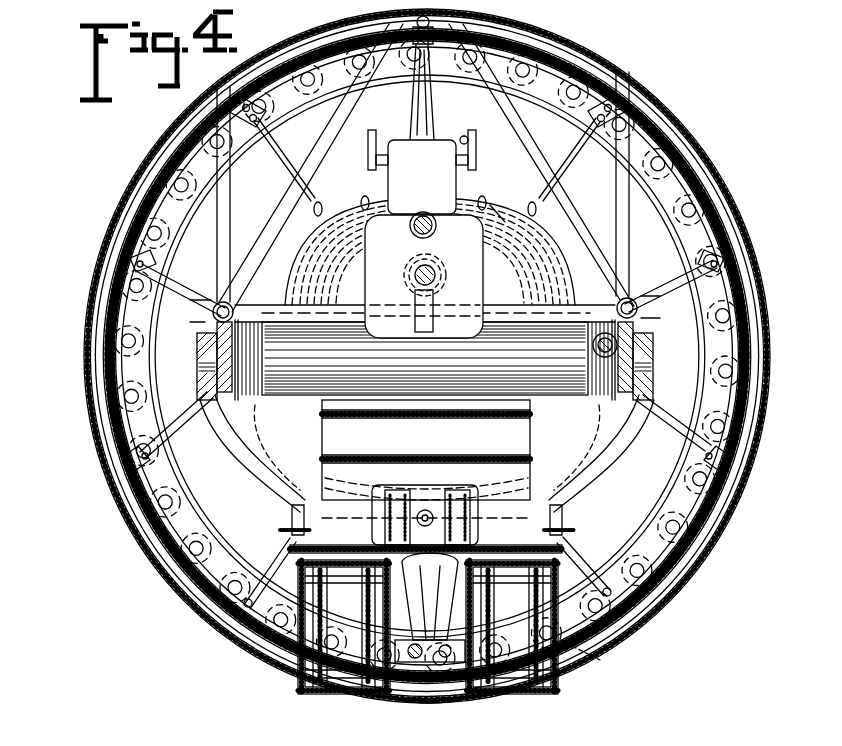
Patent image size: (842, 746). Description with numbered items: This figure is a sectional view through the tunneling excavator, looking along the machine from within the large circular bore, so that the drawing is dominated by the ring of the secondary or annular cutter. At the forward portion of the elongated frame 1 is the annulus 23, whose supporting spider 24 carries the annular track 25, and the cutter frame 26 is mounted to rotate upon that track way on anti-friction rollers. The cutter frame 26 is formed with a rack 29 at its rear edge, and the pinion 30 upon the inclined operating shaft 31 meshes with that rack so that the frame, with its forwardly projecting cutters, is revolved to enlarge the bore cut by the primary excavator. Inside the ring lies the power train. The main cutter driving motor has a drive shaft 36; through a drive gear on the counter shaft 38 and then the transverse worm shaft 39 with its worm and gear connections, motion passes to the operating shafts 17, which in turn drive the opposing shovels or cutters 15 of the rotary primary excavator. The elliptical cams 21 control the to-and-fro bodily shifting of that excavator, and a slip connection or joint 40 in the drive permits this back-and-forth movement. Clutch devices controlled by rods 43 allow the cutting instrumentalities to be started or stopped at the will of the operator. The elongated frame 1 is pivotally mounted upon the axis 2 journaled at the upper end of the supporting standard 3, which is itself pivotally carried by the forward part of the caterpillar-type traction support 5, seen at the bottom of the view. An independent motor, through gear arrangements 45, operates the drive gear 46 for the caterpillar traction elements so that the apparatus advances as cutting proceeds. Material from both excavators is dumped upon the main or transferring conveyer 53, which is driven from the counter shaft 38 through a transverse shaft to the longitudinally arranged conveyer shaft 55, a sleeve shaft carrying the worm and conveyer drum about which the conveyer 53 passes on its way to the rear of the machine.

The elongated frame 1 is at (212, 368).
The axis 2 is at (198, 350).
The supporting standard 3 is at (300, 430).
The traction support 5 is at (300, 688).
The opposing shovels or cutters 15 is at (600, 490).
The operating shafts 17 is at (205, 318).
The elliptical cams 21 is at (290, 398).
The annulus 23 is at (324, 170).
The supporting spider 24 is at (300, 168).
The annular track 25 is at (655, 160).
The cutter frame 26 is at (112, 366).
The rack 29 is at (700, 195).
The pinion 30 is at (470, 22).
The operating shaft 31 is at (420, 108).
The drive shaft 36 is at (437, 231).
The counter shaft 38 is at (432, 278).
The transverse worm shaft 39 is at (455, 276).
The slip connection or joint 40 is at (236, 306).
The rods 43 is at (508, 125).
The gear arrangements 45 is at (450, 470).
The drive gear 46 is at (598, 648).
The main conveyer 53 is at (500, 480).
The conveyer shaft 55 is at (600, 348).